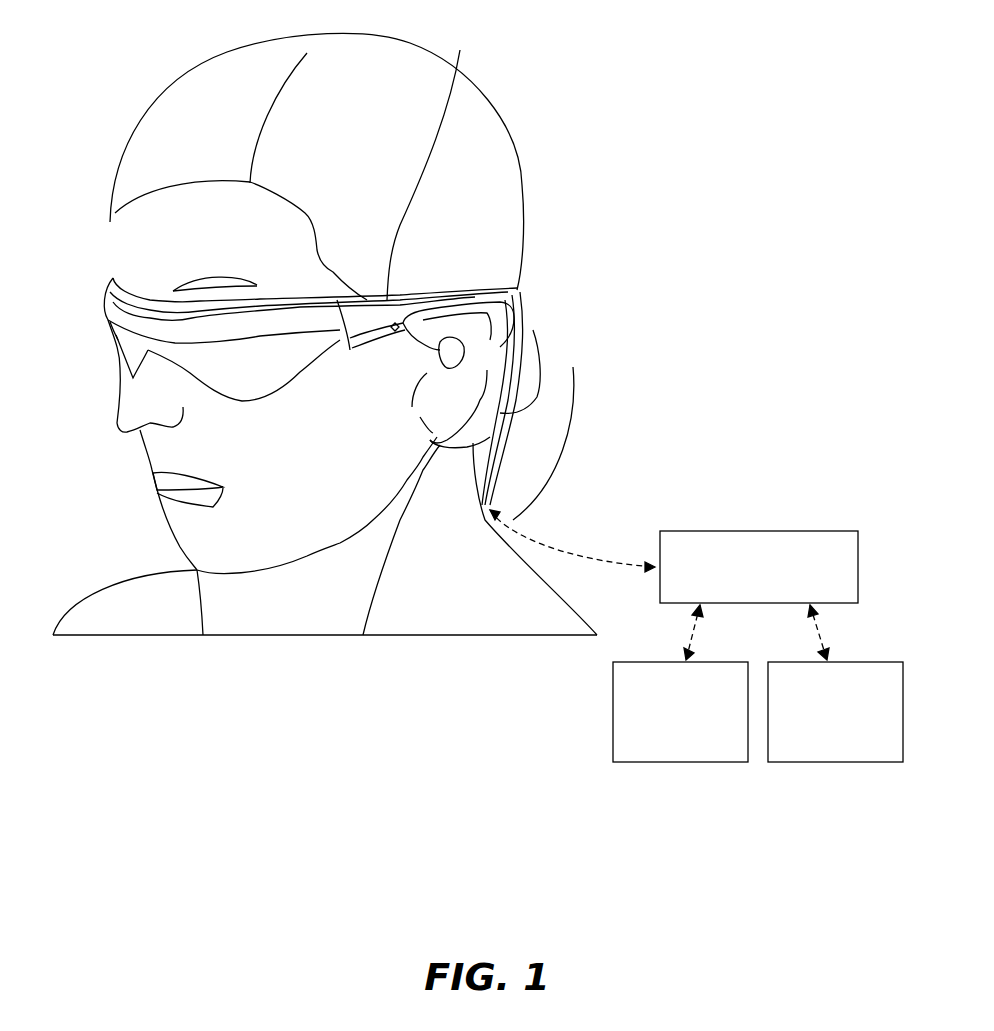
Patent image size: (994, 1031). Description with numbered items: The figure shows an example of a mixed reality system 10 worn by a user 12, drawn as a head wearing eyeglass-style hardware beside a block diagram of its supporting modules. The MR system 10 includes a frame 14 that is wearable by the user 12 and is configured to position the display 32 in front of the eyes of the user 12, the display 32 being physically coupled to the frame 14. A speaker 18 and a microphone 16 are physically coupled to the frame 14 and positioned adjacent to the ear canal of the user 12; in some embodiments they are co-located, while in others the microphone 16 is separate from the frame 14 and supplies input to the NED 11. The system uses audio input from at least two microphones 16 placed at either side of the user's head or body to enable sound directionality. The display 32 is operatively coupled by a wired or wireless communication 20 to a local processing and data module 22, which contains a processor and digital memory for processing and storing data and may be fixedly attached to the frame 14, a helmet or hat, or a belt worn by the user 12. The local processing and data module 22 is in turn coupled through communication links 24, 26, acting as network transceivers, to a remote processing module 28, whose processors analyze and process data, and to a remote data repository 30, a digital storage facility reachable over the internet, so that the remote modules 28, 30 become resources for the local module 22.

The mixed reality system 10 is at (683, 190).
The NED 11 is at (343, 348).
The user 12 is at (188, 90).
The frame 14 is at (439, 157).
The microphone 16 is at (525, 318).
The speaker 18 is at (453, 368).
The wired or wireless communication 20 is at (573, 372).
The local processing and data module 22 is at (715, 530).
The communication link 24 is at (672, 642).
The communication link 26 is at (836, 640).
The remote processing module 28 is at (678, 765).
The remote data repository 30 is at (812, 765).
The display 32 is at (112, 338).